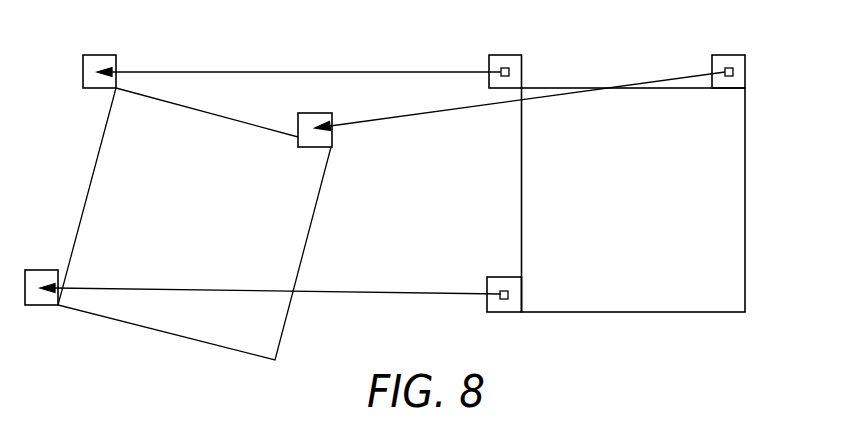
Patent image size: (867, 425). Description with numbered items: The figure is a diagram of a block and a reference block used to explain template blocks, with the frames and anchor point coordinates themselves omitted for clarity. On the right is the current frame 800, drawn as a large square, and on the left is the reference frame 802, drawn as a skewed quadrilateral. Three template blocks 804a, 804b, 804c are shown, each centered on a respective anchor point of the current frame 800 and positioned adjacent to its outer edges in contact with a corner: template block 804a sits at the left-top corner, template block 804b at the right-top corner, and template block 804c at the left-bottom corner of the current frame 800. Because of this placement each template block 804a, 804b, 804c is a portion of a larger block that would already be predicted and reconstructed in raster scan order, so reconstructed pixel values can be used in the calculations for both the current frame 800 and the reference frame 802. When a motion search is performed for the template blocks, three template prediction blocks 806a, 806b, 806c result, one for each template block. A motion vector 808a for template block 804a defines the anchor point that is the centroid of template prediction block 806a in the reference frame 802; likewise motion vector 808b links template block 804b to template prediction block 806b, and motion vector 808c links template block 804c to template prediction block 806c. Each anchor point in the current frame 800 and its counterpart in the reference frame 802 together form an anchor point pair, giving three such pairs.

The current frame 800 is at (762, 193).
The reference frame 802 is at (68, 172).
The template block 804a is at (505, 55).
The template block 804b is at (729, 55).
The template block 804c is at (498, 277).
The template prediction block 806a is at (100, 55).
The template prediction block 806b is at (332, 137).
The template prediction block 806c is at (42, 270).
The motion vector 808a is at (302, 70).
The motion vector 808b is at (690, 70).
The motion vector 808c is at (378, 292).